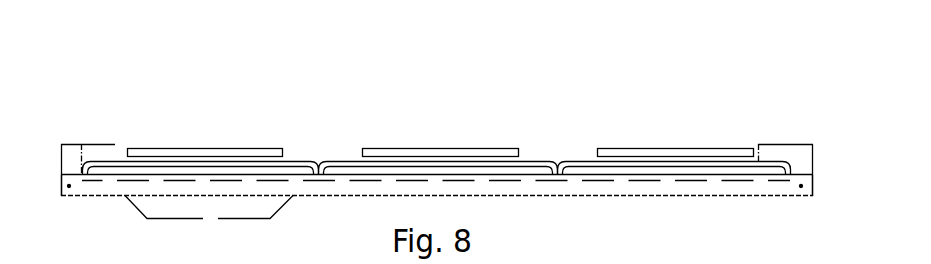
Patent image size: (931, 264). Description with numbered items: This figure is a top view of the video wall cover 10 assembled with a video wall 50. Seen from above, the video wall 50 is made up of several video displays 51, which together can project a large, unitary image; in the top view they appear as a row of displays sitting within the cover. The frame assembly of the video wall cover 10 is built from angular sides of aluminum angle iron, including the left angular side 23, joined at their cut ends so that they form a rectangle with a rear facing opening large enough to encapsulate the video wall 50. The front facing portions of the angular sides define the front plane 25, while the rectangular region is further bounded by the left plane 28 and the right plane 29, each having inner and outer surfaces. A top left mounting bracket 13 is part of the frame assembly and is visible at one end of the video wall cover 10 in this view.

The video wall cover 10 is at (107, 83).
The top left mounting bracket 13 is at (70, 155).
The left angular side 23 is at (800, 155).
The front plane 25 is at (209, 212).
The left plane 28 is at (62, 188).
The right plane 29 is at (813, 185).
The video wall 50 is at (555, 181).
The video displays 51 is at (204, 153).